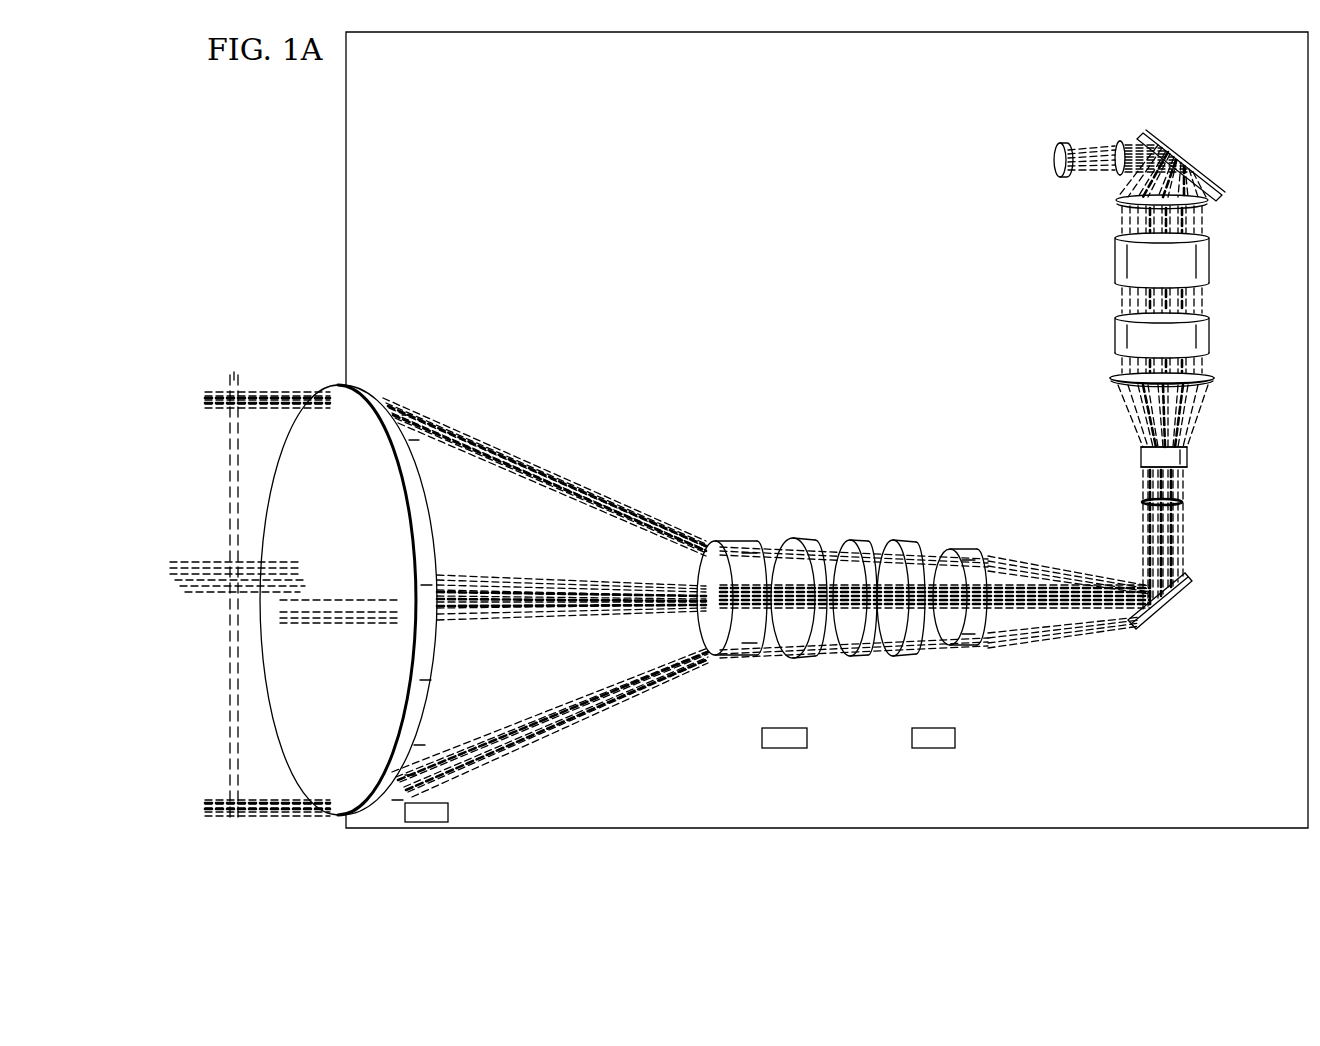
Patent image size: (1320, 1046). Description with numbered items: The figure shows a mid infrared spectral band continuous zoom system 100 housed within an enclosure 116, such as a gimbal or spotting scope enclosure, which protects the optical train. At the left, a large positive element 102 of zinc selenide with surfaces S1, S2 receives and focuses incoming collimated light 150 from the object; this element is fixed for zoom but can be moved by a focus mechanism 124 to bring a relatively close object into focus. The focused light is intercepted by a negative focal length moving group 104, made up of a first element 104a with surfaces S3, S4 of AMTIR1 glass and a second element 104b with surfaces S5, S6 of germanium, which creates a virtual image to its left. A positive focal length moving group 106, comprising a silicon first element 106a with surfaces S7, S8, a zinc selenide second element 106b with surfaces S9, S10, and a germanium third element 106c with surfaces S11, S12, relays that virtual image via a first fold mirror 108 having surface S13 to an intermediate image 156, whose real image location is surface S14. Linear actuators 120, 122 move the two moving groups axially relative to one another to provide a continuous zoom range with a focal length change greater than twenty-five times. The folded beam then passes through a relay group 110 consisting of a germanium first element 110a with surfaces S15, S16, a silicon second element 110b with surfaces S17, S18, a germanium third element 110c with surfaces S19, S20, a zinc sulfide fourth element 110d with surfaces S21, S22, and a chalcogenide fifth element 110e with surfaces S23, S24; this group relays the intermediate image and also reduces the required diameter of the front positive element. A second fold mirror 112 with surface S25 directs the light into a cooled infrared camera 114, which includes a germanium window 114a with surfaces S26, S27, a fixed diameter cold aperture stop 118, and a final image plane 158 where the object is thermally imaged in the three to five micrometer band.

The mid infrared spectral band continuous zoom system 100 is at (250, 226).
The positive element 102 is at (373, 600).
The negative focal length moving group 104 is at (832, 436).
The first element 104a is at (717, 570).
The second element 104b is at (779, 629).
The positive focal length moving group 106 is at (990, 452).
The first element 106a is at (870, 577).
The second element 106b is at (916, 637).
The third element 106c is at (994, 585).
The first fold mirror 108 is at (1169, 628).
The relay group 110 is at (1012, 183).
The first element 110a is at (1150, 444).
The second element 110b is at (1158, 367).
The third element 110c is at (1176, 327).
The fourth element 110d is at (1150, 264).
The fifth element 110e is at (1147, 206).
The second fold mirror 112 is at (1190, 149).
The cooled infrared camera 114 is at (1130, 73).
The window 114a is at (1095, 143).
The enclosure 116 is at (749, 245).
The fixed diameter cold aperture stop 118 is at (1058, 146).
The linear actuator 120 is at (762, 738).
The linear actuator 122 is at (955, 738).
The focus mechanism 124 is at (448, 812).
The incoming light 150 is at (234, 376).
The intermediate image 156 is at (1164, 480).
The final image plane 158 is at (1052, 152).
The surface S1 is at (290, 448).
The surface S2 is at (429, 498).
The surface S3 is at (702, 634).
The surface S4 is at (757, 540).
The surface S5 is at (775, 652).
The surface S6 is at (813, 654).
The surface S7 is at (852, 652).
The surface S8 is at (871, 546).
The surface S9 is at (890, 654).
The surface S10 is at (921, 651).
The surface S11 is at (948, 557).
The surface S12 is at (982, 641).
The surface S13 is at (1133, 633).
The surface S14 is at (1142, 502).
The surface S15 is at (1143, 468).
The surface S16 is at (1190, 446).
The surface S17 is at (1110, 386).
The surface S18 is at (1214, 380).
The surface S19 is at (1212, 352).
The surface S20 is at (1114, 318).
The surface S21 is at (1114, 288).
The surface S22 is at (1212, 239).
The surface S23 is at (1212, 204).
The surface S24 is at (1200, 180).
The surface S25 is at (1160, 132).
The surface S26 is at (1121, 140).
The surface S27 is at (1113, 170).